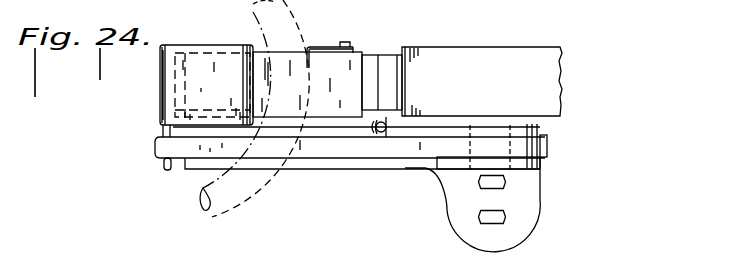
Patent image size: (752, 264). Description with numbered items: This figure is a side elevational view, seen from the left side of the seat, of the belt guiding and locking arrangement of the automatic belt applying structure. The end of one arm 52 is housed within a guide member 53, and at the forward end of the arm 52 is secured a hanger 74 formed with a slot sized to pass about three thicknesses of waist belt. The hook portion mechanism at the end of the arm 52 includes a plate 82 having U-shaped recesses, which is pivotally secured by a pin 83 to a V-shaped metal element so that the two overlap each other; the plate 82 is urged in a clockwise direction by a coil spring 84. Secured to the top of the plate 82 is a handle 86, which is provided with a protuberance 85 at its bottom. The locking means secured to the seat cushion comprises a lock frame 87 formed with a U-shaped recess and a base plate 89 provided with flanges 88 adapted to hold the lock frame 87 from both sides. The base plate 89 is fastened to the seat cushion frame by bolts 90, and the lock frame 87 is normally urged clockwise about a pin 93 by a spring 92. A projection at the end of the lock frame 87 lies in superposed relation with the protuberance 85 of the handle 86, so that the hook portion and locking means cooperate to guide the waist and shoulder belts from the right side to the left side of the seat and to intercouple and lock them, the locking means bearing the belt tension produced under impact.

The arm 52 is at (387, 65).
The guide member 53 is at (484, 30).
The hanger 74 is at (172, 62).
The plate 82 is at (212, 62).
The pin 83 is at (341, 42).
The coil spring 84 is at (317, 57).
The protuberance 85 is at (168, 170).
The handle 86 is at (167, 88).
The lock frame 87 is at (375, 148).
The flanges 88 is at (547, 127).
The base plate 89 is at (328, 164).
The bolts 90 is at (508, 192).
The spring 92 is at (379, 123).
The pin 93 is at (472, 162).